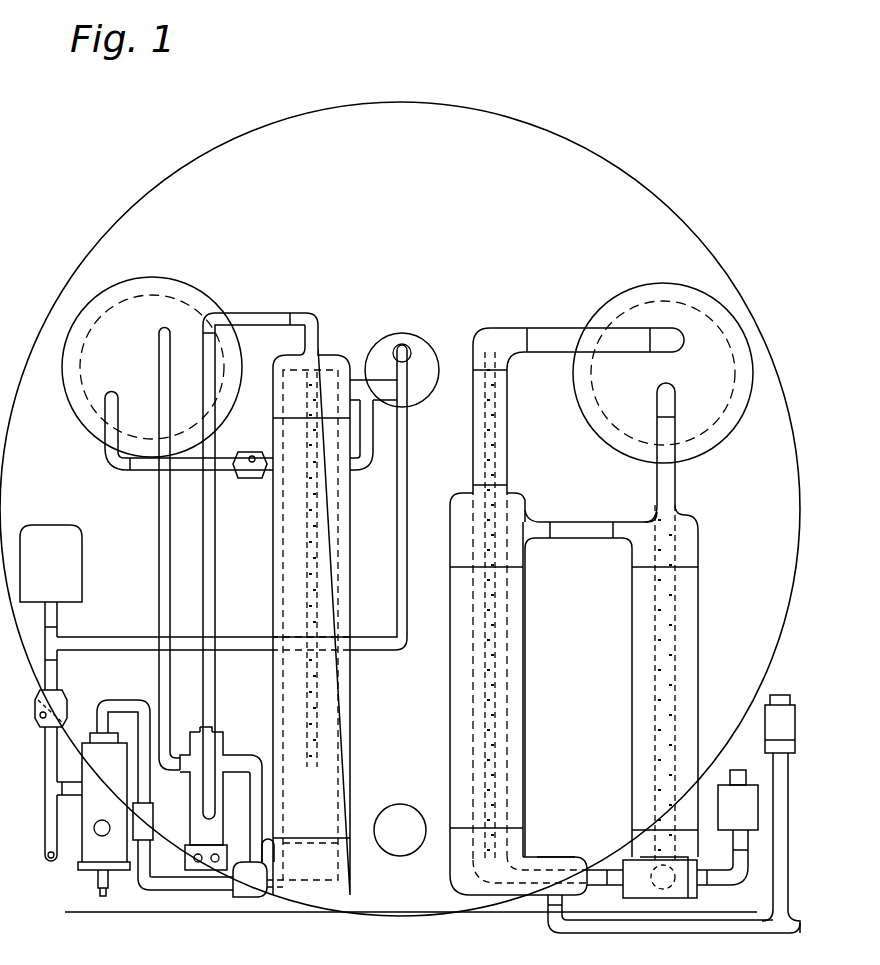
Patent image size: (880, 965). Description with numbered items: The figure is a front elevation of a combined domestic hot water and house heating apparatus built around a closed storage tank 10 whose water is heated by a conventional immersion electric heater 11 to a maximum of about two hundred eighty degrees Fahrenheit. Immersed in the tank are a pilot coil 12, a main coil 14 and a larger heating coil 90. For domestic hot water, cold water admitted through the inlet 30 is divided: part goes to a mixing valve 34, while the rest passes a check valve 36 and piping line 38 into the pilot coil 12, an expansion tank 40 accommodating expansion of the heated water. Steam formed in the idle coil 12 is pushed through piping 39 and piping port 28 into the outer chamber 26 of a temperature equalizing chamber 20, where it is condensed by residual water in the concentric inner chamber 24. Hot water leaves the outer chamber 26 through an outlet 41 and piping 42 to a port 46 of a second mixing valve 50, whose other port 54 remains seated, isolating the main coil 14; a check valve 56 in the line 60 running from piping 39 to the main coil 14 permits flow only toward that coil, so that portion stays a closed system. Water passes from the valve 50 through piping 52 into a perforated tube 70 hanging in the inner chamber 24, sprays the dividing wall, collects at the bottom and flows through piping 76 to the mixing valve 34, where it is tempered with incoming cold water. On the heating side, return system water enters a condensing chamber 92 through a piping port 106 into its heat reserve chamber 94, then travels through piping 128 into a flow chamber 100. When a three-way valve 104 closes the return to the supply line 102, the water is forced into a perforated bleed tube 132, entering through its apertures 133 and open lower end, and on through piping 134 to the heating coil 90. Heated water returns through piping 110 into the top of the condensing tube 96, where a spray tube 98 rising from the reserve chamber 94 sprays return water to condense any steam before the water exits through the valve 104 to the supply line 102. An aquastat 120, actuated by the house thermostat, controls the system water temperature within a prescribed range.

The storage tank 10 is at (632, 170).
The emersion electric heater 11 is at (390, 854).
The pilot coil 12 is at (412, 338).
The main coil 14 is at (195, 290).
The temperature equalizing chamber 20 is at (337, 610).
The inner chamber 24 is at (338, 797).
The outer chamber 26 is at (350, 743).
The piping port 28 is at (362, 378).
The inlet 30 is at (44, 832).
The mixing valve 34 is at (82, 850).
The check valve 36 is at (60, 694).
The piping line 38 is at (408, 486).
The piping 39 is at (378, 404).
The expansion tank 40 is at (82, 552).
The outlet 41 is at (256, 862).
The piping 42 is at (263, 808).
The port 46 is at (226, 752).
The mixing valve 50 is at (160, 830).
The piping 52 is at (216, 370).
The port 54 is at (178, 752).
The check valve 56 is at (262, 432).
The line 60 is at (150, 472).
The tube 70 is at (320, 506).
The piping 76 is at (180, 892).
The heating coil 90 is at (625, 288).
The condensing chamber 92 is at (456, 702).
The heat reserve chamber 94 is at (455, 866).
The condensing tube 96 is at (510, 636).
The spray tube 98 is at (498, 423).
The flow chamber 100 is at (700, 594).
The supply line 102 is at (738, 770).
The three-way valve 104 is at (688, 896).
The piping port 106 is at (545, 908).
The piping 110 is at (550, 327).
The aquastat 120 is at (752, 818).
The piping 128 is at (572, 522).
The bleed tube 132 is at (662, 682).
The apertures 133 is at (655, 742).
The piping 134 is at (676, 484).